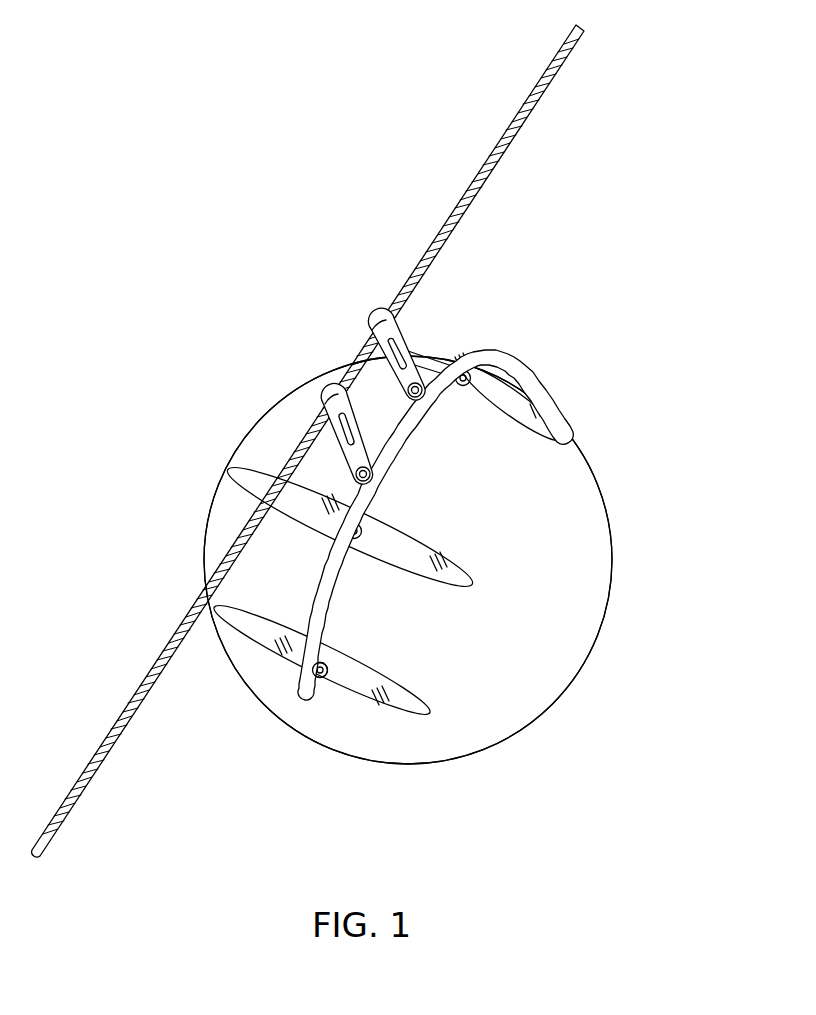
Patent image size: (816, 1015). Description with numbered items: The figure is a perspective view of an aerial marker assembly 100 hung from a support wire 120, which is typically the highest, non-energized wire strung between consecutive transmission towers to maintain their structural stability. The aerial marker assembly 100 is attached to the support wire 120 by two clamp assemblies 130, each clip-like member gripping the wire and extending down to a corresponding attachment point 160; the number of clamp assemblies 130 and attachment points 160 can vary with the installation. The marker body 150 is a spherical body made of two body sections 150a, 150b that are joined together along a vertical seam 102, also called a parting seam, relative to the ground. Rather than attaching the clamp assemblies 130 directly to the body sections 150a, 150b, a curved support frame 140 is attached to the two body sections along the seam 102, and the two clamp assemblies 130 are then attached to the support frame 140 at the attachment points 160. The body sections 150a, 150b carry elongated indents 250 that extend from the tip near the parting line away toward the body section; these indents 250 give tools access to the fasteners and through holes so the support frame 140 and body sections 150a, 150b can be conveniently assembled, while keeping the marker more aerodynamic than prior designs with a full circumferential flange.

The aerial marker assembly 100 is at (150, 208).
The vertical seam 102 is at (330, 693).
The support wire 120 is at (488, 177).
The clamp assembly 130 is at (368, 330).
The support frame 140 is at (300, 683).
The marker body 150 is at (228, 503).
The body section 150a is at (602, 559).
The body section 150b is at (205, 552).
The attachment point 160 is at (417, 383).
The indent 250 is at (543, 417).